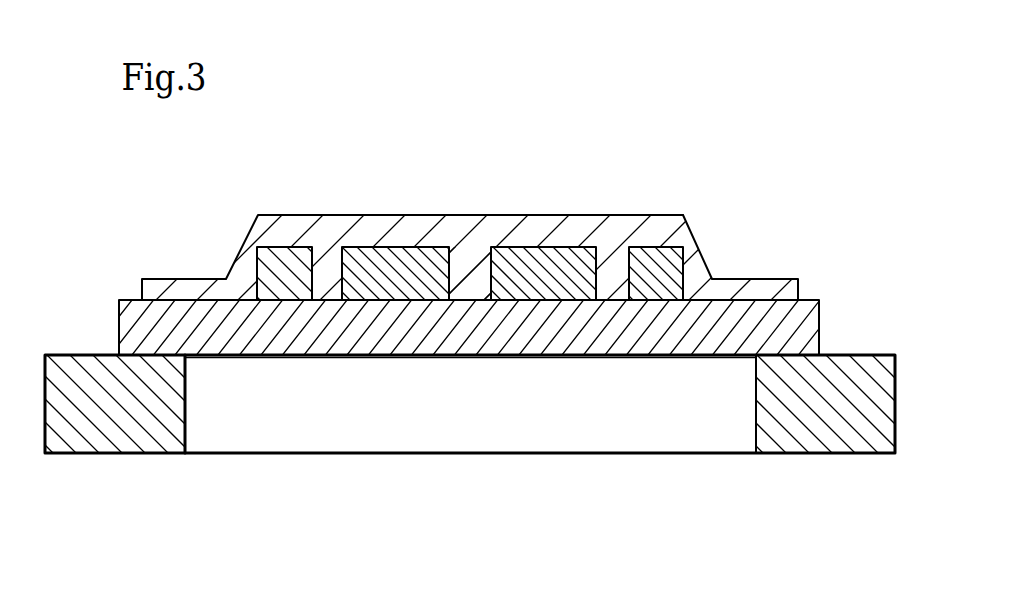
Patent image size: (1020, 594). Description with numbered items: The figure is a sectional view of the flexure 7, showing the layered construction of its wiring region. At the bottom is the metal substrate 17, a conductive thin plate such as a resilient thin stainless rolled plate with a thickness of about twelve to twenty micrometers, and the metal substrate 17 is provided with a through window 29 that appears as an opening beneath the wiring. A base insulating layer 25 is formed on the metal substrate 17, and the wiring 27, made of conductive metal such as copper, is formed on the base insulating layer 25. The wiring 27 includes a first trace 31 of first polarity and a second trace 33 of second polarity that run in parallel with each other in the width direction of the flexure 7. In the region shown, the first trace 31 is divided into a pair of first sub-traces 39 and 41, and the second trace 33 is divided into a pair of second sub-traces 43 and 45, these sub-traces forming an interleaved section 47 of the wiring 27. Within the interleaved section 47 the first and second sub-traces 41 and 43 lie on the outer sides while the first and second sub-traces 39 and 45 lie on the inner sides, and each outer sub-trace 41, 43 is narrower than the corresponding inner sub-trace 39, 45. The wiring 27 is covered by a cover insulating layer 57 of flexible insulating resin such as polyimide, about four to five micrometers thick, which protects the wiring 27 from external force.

The flexure 7 is at (643, 158).
The metal substrate 17 is at (128, 453).
The base insulating layer 25 is at (118, 322).
The wiring 27 is at (685, 242).
The through window 29 is at (187, 422).
The first trace 31 is at (560, 110).
The second trace 33 is at (492, 510).
The first sub-trace 39 is at (408, 245).
The first sub-trace 41 is at (636, 245).
The second sub-trace 43 is at (282, 300).
The second sub-trace 45 is at (538, 300).
The interleaved section 47 is at (452, 242).
The cover insulating layer 57 is at (305, 225).